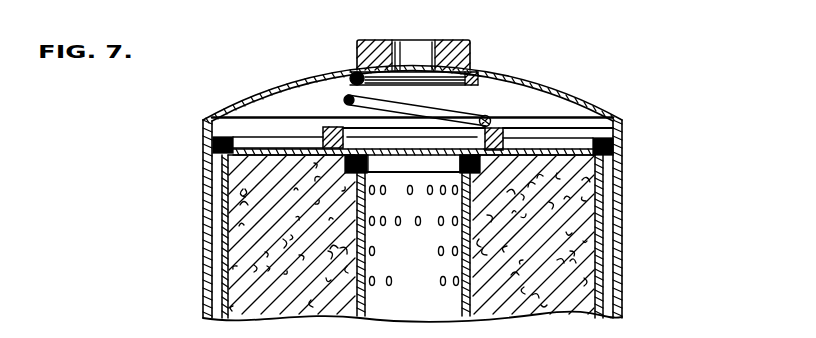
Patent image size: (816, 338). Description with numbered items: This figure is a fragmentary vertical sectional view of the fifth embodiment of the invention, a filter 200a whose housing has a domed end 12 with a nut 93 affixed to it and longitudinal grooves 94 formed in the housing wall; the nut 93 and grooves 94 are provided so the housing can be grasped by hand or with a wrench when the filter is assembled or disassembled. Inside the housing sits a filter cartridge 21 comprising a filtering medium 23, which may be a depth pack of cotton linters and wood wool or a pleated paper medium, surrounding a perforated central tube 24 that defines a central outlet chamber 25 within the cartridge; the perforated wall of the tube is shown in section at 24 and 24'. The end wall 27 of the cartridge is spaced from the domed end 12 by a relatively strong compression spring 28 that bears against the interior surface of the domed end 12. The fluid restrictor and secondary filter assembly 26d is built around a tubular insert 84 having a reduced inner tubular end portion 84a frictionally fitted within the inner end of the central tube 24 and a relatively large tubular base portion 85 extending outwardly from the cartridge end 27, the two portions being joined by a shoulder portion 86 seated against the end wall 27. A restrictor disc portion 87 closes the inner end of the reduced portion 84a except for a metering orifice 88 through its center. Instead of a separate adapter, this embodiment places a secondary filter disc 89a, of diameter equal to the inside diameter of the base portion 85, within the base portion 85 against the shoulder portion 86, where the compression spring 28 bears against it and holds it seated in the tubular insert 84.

The domed end 12 is at (527, 82).
The nut 93 is at (470, 44).
The compression spring 28 is at (341, 99).
The secondary filter disc 89a is at (466, 152).
The fluid restrictor and secondary filter assembly 26d is at (505, 125).
The tubular insert 84 is at (323, 134).
The tubular base portion 85 is at (504, 135).
The reduced inner tubular end portion 84a is at (460, 160).
The shoulder portion 86 is at (481, 172).
The end wall 27 is at (536, 165).
The longitudinal grooves 94 is at (205, 193).
The filter 200a is at (627, 241).
The metering orifice 88 is at (395, 236).
The restrictor disc portion 87 is at (437, 175).
The perforated central tube 24 is at (385, 244).
The center tube wall 24' is at (495, 244).
The central outlet chamber 25 is at (433, 283).
The filtering medium 23 is at (597, 277).
The filter cartridge 21 is at (603, 302).